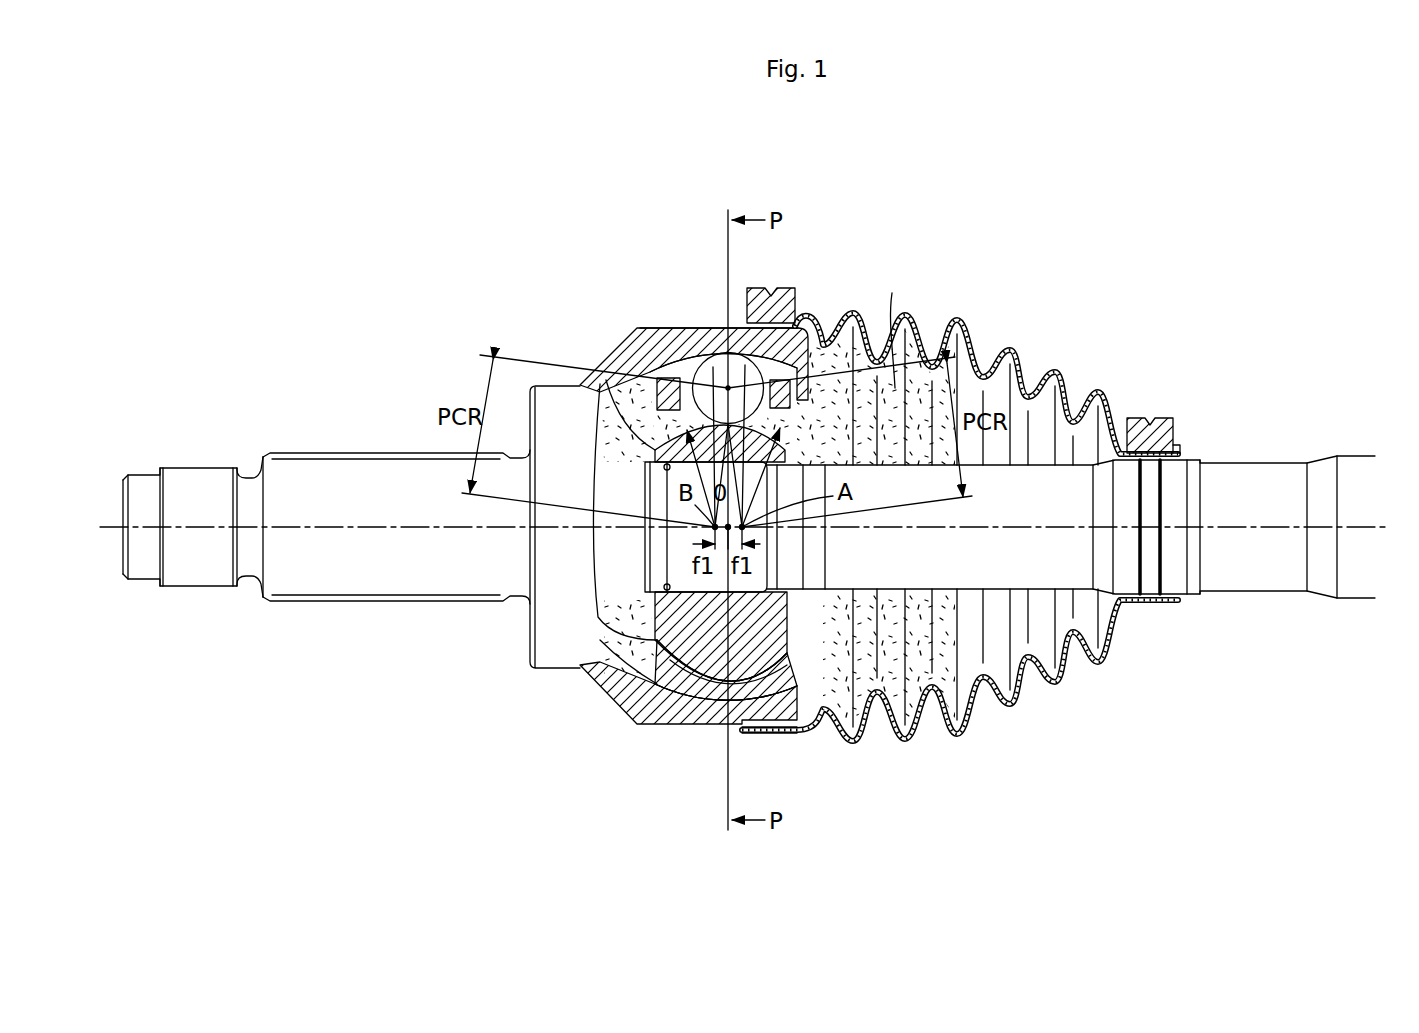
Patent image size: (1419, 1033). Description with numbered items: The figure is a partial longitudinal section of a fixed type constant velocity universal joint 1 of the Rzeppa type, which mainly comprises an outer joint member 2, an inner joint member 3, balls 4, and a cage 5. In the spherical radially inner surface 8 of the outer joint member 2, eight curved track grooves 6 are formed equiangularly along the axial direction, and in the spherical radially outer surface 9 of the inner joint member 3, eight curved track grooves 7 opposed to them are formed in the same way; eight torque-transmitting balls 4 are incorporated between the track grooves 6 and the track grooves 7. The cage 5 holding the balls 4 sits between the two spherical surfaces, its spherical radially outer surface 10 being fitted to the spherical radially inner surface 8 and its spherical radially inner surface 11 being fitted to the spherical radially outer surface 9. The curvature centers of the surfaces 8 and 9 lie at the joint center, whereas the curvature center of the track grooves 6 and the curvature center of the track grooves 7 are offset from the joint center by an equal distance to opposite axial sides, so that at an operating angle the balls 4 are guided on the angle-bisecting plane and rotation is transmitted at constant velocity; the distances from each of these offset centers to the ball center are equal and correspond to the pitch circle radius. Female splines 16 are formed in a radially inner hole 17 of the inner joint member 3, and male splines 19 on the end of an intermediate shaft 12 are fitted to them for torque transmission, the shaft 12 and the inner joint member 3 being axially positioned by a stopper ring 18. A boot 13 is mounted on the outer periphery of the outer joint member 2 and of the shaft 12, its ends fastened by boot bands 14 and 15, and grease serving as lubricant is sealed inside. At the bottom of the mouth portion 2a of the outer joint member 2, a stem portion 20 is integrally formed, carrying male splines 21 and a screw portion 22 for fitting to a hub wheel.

The fixed type constant velocity universal joint 1 is at (808, 203).
The outer joint member 2 is at (630, 330).
The mouth portion 2a is at (678, 345).
The inner joint member 3 is at (610, 393).
The ball 4 is at (712, 373).
The cage 5 is at (722, 380).
The track groove 6 is at (668, 372).
The track groove 7 is at (787, 430).
The spherical radially inner surface 8 is at (697, 672).
The spherical radially outer surface 9 is at (757, 722).
The spherical radially outer surface 10 is at (719, 668).
The spherical radially inner surface 11 is at (657, 668).
The intermediate shaft 12 is at (1250, 462).
The boot 13 is at (965, 325).
The boot band 14 is at (783, 288).
The boot band 15 is at (1137, 415).
The female splines 16 is at (657, 592).
The radially inner hole 17 is at (690, 578).
The stopper ring 18 is at (600, 648).
The male splines 19 is at (610, 683).
The stem portion 20 is at (322, 450).
The male splines 21 is at (395, 452).
The screw portion 22 is at (203, 467).